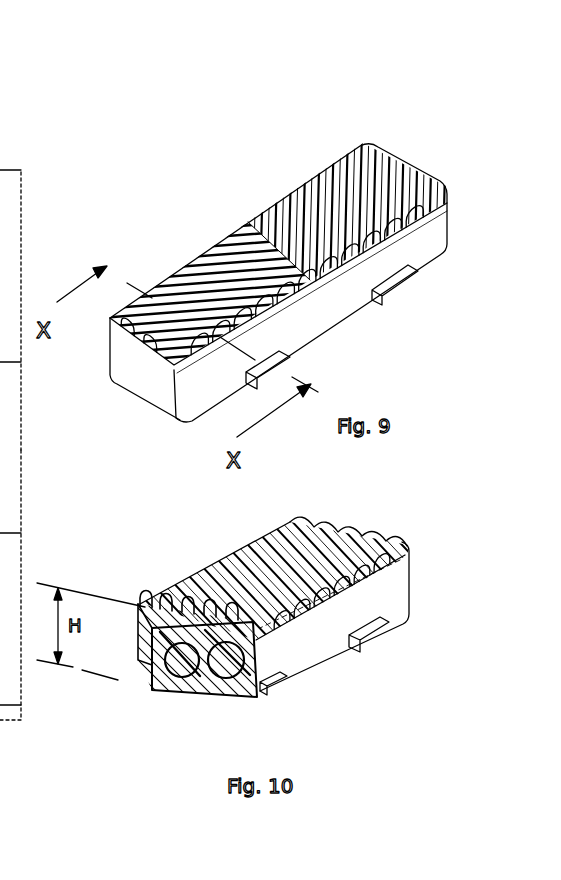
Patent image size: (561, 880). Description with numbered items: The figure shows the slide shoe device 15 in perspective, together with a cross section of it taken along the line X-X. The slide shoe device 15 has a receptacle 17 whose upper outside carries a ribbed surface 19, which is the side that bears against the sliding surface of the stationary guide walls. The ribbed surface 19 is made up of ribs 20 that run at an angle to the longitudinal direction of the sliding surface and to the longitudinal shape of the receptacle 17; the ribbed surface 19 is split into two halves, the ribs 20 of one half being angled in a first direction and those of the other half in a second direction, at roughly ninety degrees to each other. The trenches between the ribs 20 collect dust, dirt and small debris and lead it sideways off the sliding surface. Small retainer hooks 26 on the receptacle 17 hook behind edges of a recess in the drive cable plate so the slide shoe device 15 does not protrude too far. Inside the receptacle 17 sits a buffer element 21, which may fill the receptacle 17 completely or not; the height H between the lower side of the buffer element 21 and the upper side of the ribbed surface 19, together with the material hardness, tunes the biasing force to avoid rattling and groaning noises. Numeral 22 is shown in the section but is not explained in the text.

In FIG. 9, the slide shoe device 15 is at (412, 142).
In FIG. 10, the slide shoe device 15 is at (424, 570).
In FIG. 9, the receptacle 17 is at (148, 383).
In FIG. 10, the receptacle 17 is at (140, 606).
In FIG. 9, the ribbed surface 19 is at (216, 232).
In FIG. 9, the ribs 20 is at (388, 220).
In FIG. 10, the ribs 20 is at (140, 678).
In FIG. 10, the buffer element 21 is at (185, 660).
In FIG. 10, the channel 22 is at (222, 672).
In FIG. 9, the retainer hooks 26 is at (408, 278).
In FIG. 10, the retainer hooks 26 is at (377, 628).